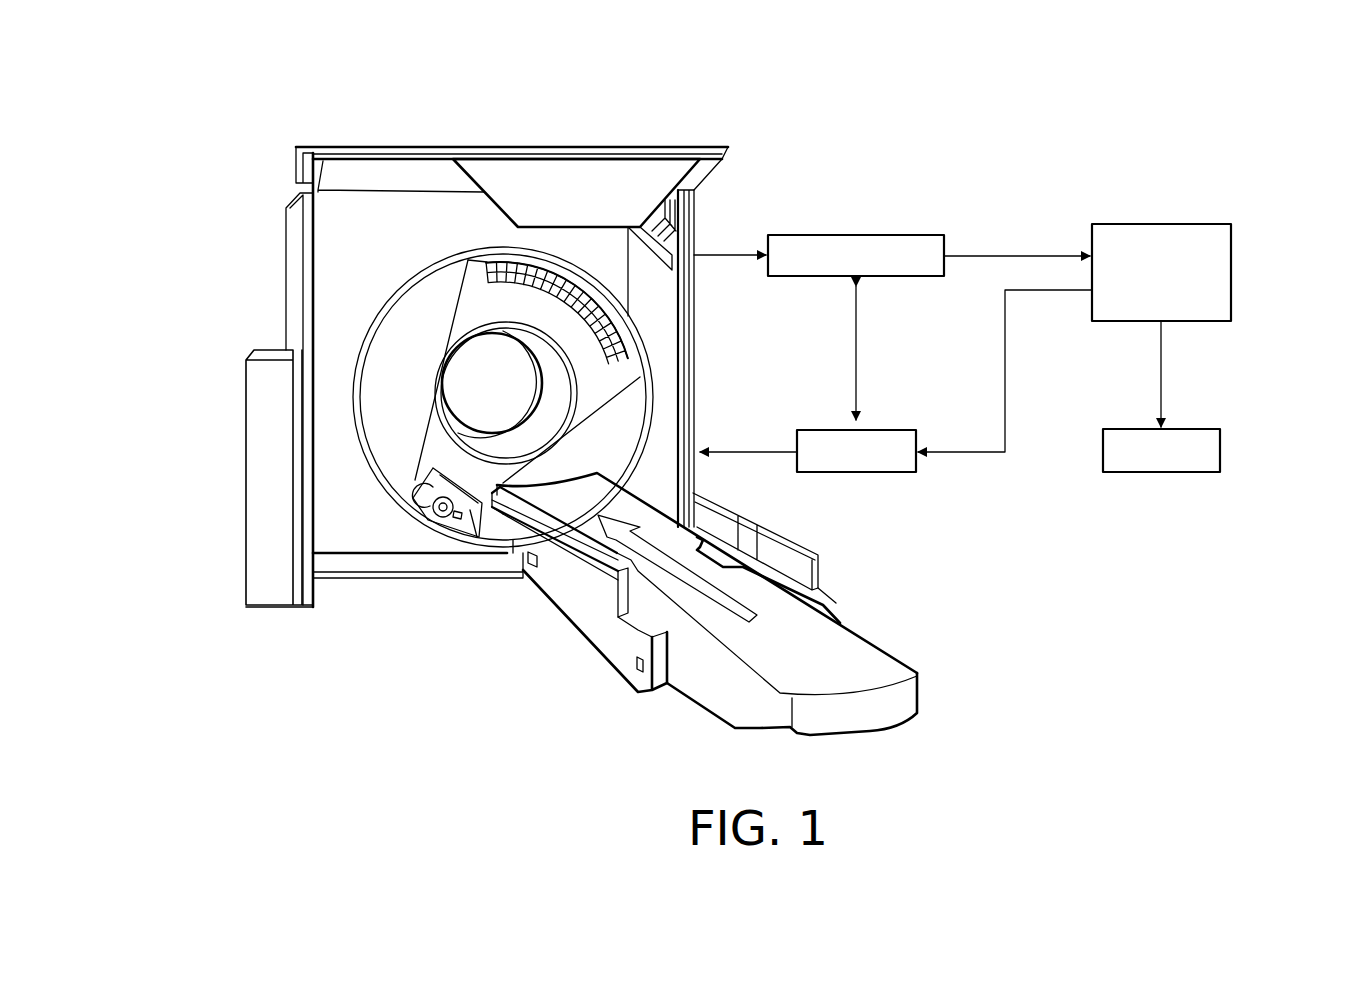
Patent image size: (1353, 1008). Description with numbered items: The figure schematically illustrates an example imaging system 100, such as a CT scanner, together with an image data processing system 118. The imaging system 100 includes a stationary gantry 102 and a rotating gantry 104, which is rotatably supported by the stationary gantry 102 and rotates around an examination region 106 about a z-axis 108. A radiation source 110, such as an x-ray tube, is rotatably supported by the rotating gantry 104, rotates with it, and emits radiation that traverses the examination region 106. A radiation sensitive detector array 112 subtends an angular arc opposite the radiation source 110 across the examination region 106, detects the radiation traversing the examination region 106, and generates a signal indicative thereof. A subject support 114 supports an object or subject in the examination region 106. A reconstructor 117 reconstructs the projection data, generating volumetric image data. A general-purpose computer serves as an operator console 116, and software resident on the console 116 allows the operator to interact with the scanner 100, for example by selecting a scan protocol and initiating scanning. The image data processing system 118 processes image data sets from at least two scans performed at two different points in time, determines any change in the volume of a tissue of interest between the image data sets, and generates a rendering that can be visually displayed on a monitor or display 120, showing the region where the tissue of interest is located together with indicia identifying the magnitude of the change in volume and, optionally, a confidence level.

The imaging system 100 is at (190, 141).
The stationary gantry 102 is at (307, 270).
The rotating gantry 104 is at (475, 303).
The examination region 106 is at (493, 377).
The z-axis 108 is at (847, 630).
The radiation source 110 is at (443, 514).
The radiation sensitive detector array 112 is at (642, 328).
The subject support 114 is at (918, 690).
The operator console 116 is at (900, 429).
The reconstructor 117 is at (889, 234).
The image data processing system 118 is at (1231, 272).
The display 120 is at (1220, 452).